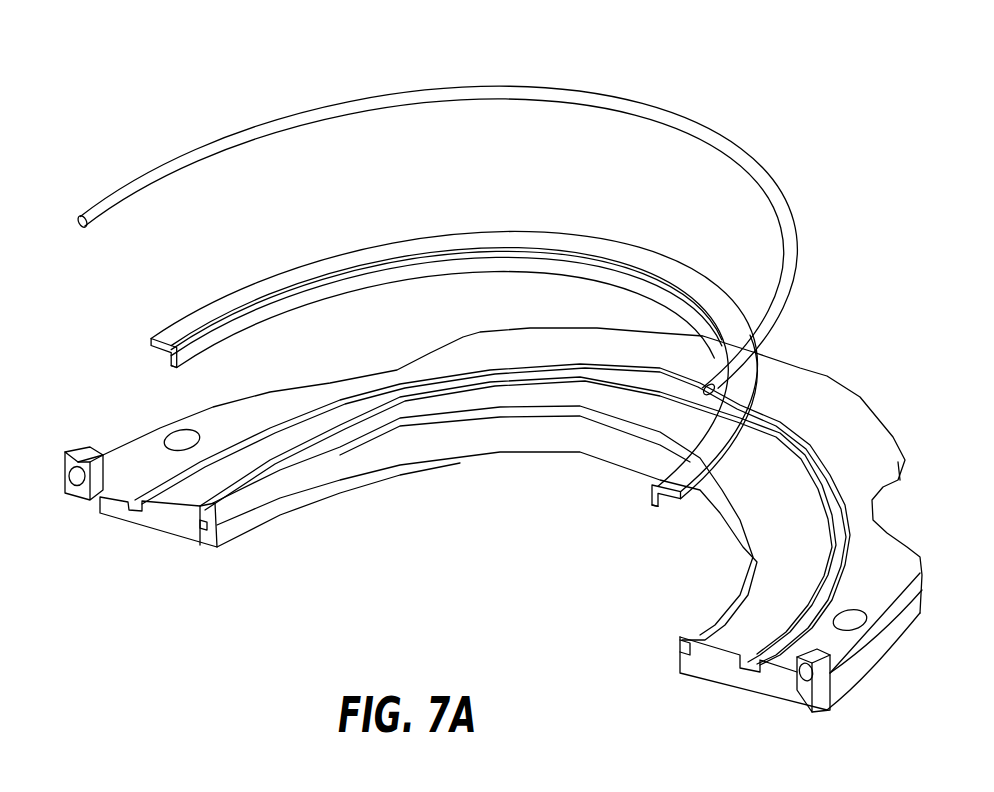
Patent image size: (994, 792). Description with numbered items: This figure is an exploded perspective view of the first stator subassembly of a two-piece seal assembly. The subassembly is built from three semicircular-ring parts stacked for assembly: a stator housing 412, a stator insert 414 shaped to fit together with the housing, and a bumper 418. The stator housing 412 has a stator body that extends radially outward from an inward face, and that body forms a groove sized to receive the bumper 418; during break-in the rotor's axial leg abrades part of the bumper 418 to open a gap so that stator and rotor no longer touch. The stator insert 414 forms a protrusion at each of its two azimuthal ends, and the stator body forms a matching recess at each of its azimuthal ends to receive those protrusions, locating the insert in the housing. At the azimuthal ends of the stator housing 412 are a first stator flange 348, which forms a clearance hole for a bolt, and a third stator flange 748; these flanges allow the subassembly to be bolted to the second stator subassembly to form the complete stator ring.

The bumper 418 is at (507, 85).
The stator insert 414 is at (393, 387).
The stator housing 412 is at (478, 544).
The first stator flange 348 is at (78, 453).
The third stator flange 748 is at (832, 673).